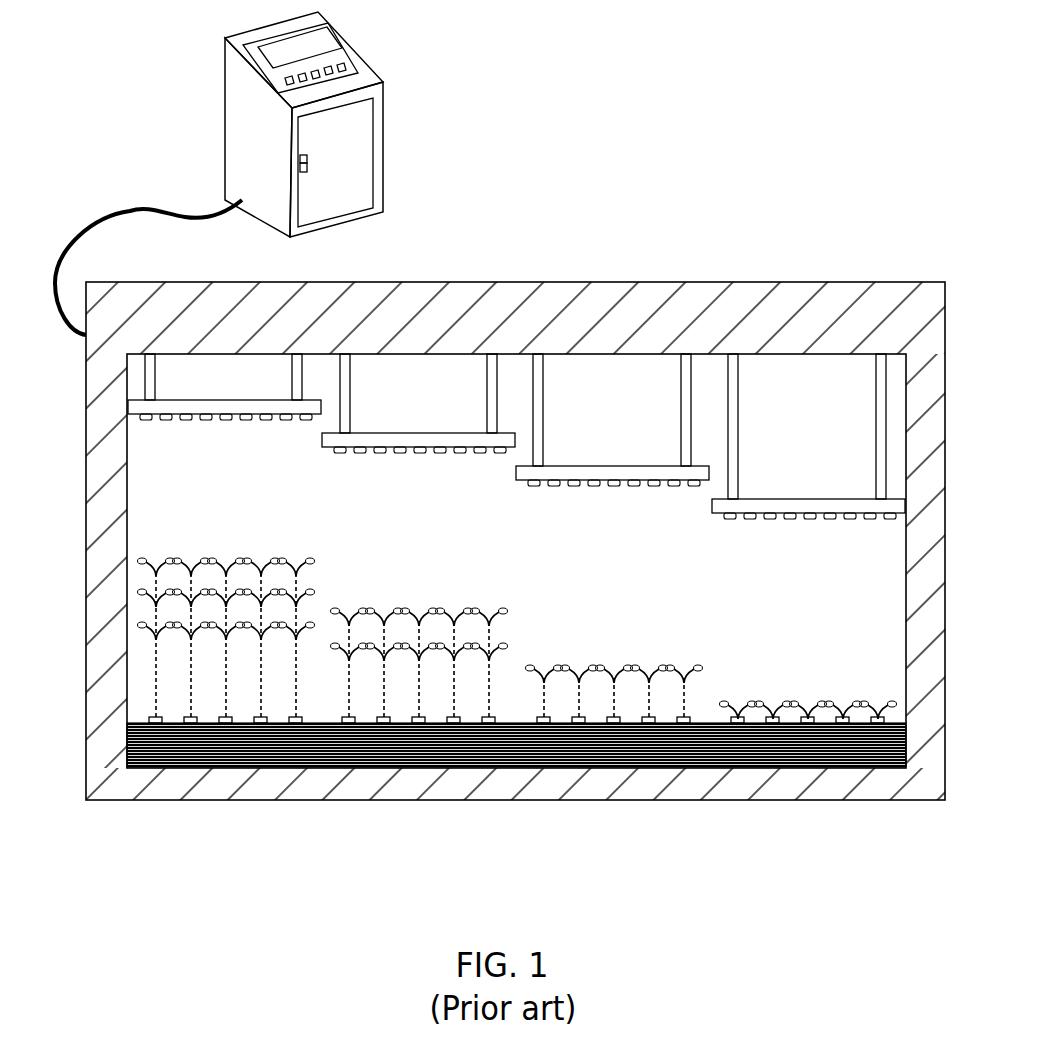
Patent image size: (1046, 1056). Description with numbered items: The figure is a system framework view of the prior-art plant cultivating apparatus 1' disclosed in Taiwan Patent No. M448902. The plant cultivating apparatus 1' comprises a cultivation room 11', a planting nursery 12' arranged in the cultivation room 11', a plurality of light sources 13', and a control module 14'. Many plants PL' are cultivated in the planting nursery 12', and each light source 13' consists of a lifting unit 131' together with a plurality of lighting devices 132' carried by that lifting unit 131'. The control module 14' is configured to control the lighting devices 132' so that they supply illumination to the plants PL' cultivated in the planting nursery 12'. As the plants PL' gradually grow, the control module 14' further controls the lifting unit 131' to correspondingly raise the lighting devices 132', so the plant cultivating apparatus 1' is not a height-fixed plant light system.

The plant cultivating apparatus 1' is at (501, 448).
The cultivation room 11' is at (516, 583).
The planting nursery 12' is at (516, 799).
The light source 13' is at (516, 467).
The lifting unit 131' is at (612, 444).
The lighting devices 132' is at (614, 527).
The control module 14' is at (275, 173).
The plant PL' is at (517, 626).